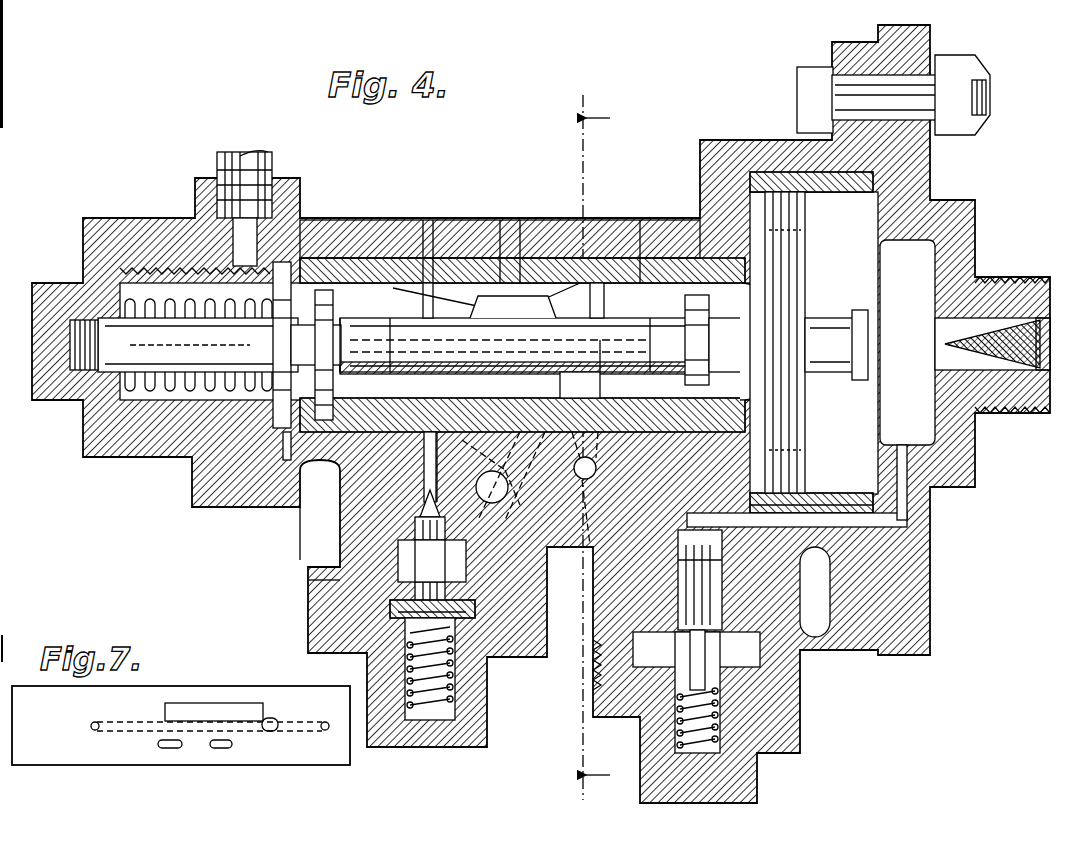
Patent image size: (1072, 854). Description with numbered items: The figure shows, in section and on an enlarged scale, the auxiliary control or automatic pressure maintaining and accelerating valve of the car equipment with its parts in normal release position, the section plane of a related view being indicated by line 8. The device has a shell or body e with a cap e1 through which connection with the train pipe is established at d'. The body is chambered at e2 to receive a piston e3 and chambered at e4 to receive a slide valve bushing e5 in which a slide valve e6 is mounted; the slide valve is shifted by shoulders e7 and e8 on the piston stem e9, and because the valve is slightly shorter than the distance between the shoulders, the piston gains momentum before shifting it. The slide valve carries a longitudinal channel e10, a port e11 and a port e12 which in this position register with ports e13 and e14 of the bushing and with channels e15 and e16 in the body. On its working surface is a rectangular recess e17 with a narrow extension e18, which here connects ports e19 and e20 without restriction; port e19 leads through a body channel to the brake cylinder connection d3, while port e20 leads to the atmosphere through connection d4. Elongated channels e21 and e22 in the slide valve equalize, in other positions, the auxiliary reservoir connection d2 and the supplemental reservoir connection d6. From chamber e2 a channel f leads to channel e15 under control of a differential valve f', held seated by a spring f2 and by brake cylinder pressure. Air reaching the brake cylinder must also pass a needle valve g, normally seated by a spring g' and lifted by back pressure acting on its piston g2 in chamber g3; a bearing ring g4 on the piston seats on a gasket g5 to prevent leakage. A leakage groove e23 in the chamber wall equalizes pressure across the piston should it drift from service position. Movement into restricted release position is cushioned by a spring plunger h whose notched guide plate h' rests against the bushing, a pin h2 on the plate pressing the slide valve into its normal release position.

In FIG. 4, the cap e1 is at (962, 457).
In FIG. 4, the body e is at (662, 232).
In FIG. 4, the chamber e2 is at (800, 426).
In FIG. 4, the piston e3 is at (786, 276).
In FIG. 4, the chamber e4 is at (334, 250).
In FIG. 4, the slide valve bushing e5 is at (357, 265).
In FIG. 4, the slide valve e6 is at (382, 362).
In FIG. 4, the shoulder e7 is at (722, 340).
In FIG. 4, the shoulder e8 is at (330, 340).
In FIG. 4, the stem e9 is at (513, 323).
In FIG. 4, the longitudinal channel e10 is at (592, 352).
In FIG. 4, the port e11 is at (642, 370).
In FIG. 4, the port e12 is at (398, 365).
In FIG. 4, the port e13 is at (778, 345).
In FIG. 4, the port e14 is at (283, 393).
In FIG. 4, the channel e15 is at (696, 649).
In FIG. 4, the channel e16 is at (332, 478).
In FIG. 4, the recess e17 is at (605, 282).
In FIG. 7, the recess e17 is at (172, 712).
In FIG. 4, the narrow extension e18 is at (652, 356).
In FIG. 7, the narrow extension e18 is at (272, 718).
In FIG. 4, the port e19 is at (652, 433).
In FIG. 4, the port e20 is at (500, 300).
In FIG. 4, the channel e21 is at (578, 330).
In FIG. 7, the channel e21 is at (221, 749).
In FIG. 4, the channel e22 is at (470, 300).
In FIG. 7, the channel e22 is at (172, 749).
In FIG. 4, the leakage groove e23 is at (838, 497).
In FIG. 4, the passage d is at (423, 239).
In FIG. 4, the train pipe connection d' is at (1003, 326).
In FIG. 4, the auxiliary reservoir connection d2 is at (545, 562).
In FIG. 4, the brake cylinder connection d3 is at (540, 456).
In FIG. 4, the atmosphere connection d4 is at (426, 560).
In FIG. 4, the supplemental reservoir connection d6 is at (268, 172).
In FIG. 4, the channel f is at (822, 489).
In FIG. 4, the differential valve f' is at (763, 600).
In FIG. 4, the spring f2 is at (722, 730).
In FIG. 4, the needle valve g is at (371, 519).
In FIG. 4, the spring g' is at (469, 682).
In FIG. 4, the piston g2 is at (396, 592).
In FIG. 4, the chamber g3 is at (345, 564).
In FIG. 4, the bearing ring g4 is at (403, 614).
In FIG. 4, the gasket g5 is at (398, 612).
In FIG. 4, the spring plunger h is at (184, 345).
In FIG. 4, the guide plate h' is at (208, 345).
In FIG. 4, the pin h2 is at (296, 440).
In FIG. 4, the section line 8 is at (596, 447).